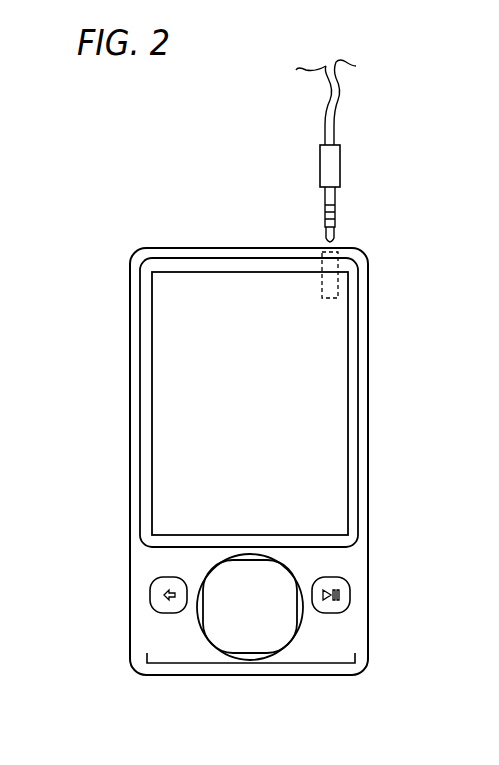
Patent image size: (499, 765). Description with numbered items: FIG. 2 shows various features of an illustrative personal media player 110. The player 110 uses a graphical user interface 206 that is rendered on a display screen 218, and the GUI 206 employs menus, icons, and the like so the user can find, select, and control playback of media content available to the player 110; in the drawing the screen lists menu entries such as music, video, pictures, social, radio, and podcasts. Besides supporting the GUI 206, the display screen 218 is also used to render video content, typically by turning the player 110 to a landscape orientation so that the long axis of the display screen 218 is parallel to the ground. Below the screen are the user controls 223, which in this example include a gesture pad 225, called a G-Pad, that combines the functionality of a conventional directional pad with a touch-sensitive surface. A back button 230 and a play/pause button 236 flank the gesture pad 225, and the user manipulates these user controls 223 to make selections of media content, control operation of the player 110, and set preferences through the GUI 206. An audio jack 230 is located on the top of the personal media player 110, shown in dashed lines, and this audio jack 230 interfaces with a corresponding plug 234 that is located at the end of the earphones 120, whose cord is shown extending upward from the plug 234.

The personal media player 110 is at (168, 247).
The earphones 120 is at (335, 88).
The plug 234 is at (320, 158).
The back button / audio jack 230 is at (330, 283).
The graphical user interface 206 is at (317, 318).
The display screen 218 is at (302, 445).
The gesture pad 225 is at (250, 607).
The play/pause button 236 is at (333, 607).
The user controls 223 is at (250, 665).